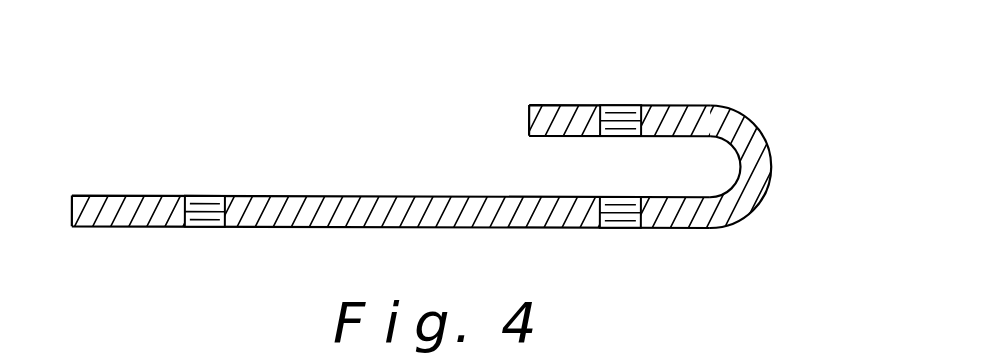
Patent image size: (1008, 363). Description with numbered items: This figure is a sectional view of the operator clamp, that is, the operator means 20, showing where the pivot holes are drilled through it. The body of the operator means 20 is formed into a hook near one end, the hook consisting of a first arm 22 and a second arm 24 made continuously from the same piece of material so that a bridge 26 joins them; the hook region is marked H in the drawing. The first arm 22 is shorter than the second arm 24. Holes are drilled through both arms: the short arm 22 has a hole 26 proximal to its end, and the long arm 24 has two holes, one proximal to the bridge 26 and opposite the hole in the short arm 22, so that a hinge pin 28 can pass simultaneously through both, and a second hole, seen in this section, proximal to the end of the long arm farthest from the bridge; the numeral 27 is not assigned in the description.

The operator means 20 is at (456, 168).
The first arm 22 is at (568, 125).
The second arm 24 is at (527, 197).
The bridge 26 is at (617, 123).
The lower buried region 27 is at (622, 212).
The hinge pin 28 is at (208, 212).
The hinge / bend portion H is at (773, 171).